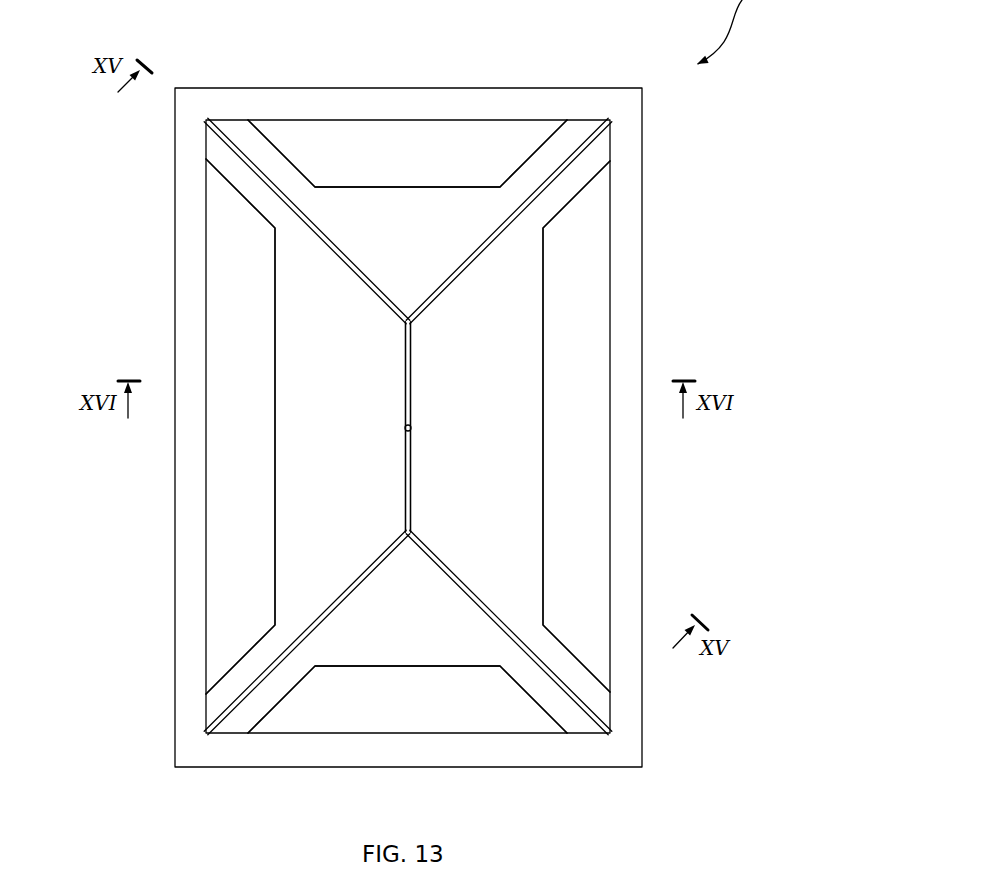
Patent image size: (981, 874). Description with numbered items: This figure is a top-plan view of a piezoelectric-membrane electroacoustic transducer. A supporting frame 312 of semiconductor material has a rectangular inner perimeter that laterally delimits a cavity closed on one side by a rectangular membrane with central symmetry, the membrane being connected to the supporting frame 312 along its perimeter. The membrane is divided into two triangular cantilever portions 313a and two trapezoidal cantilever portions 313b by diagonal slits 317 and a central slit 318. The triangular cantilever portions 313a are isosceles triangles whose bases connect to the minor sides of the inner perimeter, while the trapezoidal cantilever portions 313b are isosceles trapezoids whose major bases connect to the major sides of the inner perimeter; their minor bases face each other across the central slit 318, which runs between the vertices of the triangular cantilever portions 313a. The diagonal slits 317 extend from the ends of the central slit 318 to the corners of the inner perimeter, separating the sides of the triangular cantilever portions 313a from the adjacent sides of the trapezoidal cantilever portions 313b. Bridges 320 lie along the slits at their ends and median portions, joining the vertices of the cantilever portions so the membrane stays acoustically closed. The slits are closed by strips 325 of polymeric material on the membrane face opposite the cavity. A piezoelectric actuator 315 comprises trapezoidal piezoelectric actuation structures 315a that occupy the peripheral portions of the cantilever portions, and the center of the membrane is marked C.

The supporting frame 312 is at (620, 555).
The triangular cantilever portions 313a is at (456, 200).
The trapezoidal cantilever portions 313b is at (287, 472).
The piezoelectric actuator 315 is at (358, 210).
The piezoelectric actuation structures 315a is at (417, 130).
The diagonal slits 317 is at (262, 182).
The central slit 318 is at (418, 364).
The bridges 320 is at (496, 221).
The strips 325 is at (252, 150).
The center C is at (405, 430).